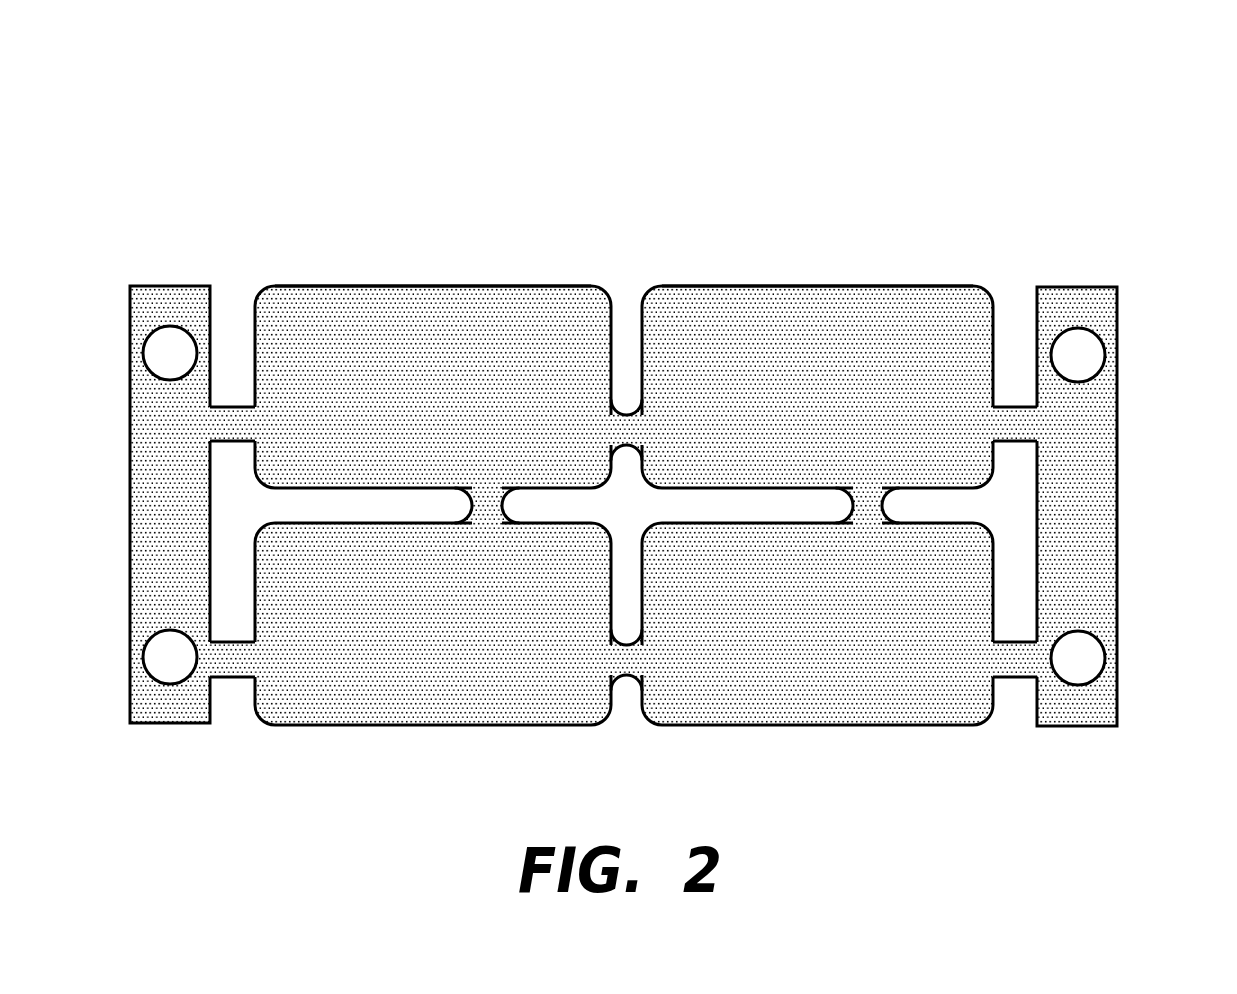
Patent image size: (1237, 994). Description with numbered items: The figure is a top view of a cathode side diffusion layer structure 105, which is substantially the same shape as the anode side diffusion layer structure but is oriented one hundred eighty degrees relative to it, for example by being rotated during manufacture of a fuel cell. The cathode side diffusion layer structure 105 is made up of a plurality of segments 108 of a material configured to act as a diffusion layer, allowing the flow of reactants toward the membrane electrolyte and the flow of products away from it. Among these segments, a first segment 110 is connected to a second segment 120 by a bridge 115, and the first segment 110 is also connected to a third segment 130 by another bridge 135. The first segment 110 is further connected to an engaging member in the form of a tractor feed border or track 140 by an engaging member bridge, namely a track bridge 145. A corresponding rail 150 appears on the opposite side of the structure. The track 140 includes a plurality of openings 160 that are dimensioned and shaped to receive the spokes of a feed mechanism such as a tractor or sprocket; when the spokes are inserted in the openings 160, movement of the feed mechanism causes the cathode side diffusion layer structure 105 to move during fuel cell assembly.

The cathode side diffusion layer structure 105 is at (358, 145).
The plurality of segments 108 is at (668, 277).
The first segment 110 is at (845, 404).
The bridge 115 is at (866, 503).
The second segment 120 is at (845, 636).
The third segment 130 is at (463, 403).
The bridge 135 is at (623, 430).
The track 140 is at (1084, 492).
The track bridge 145 is at (1017, 426).
The side rail 150 is at (152, 472).
The openings 160 is at (1077, 351).